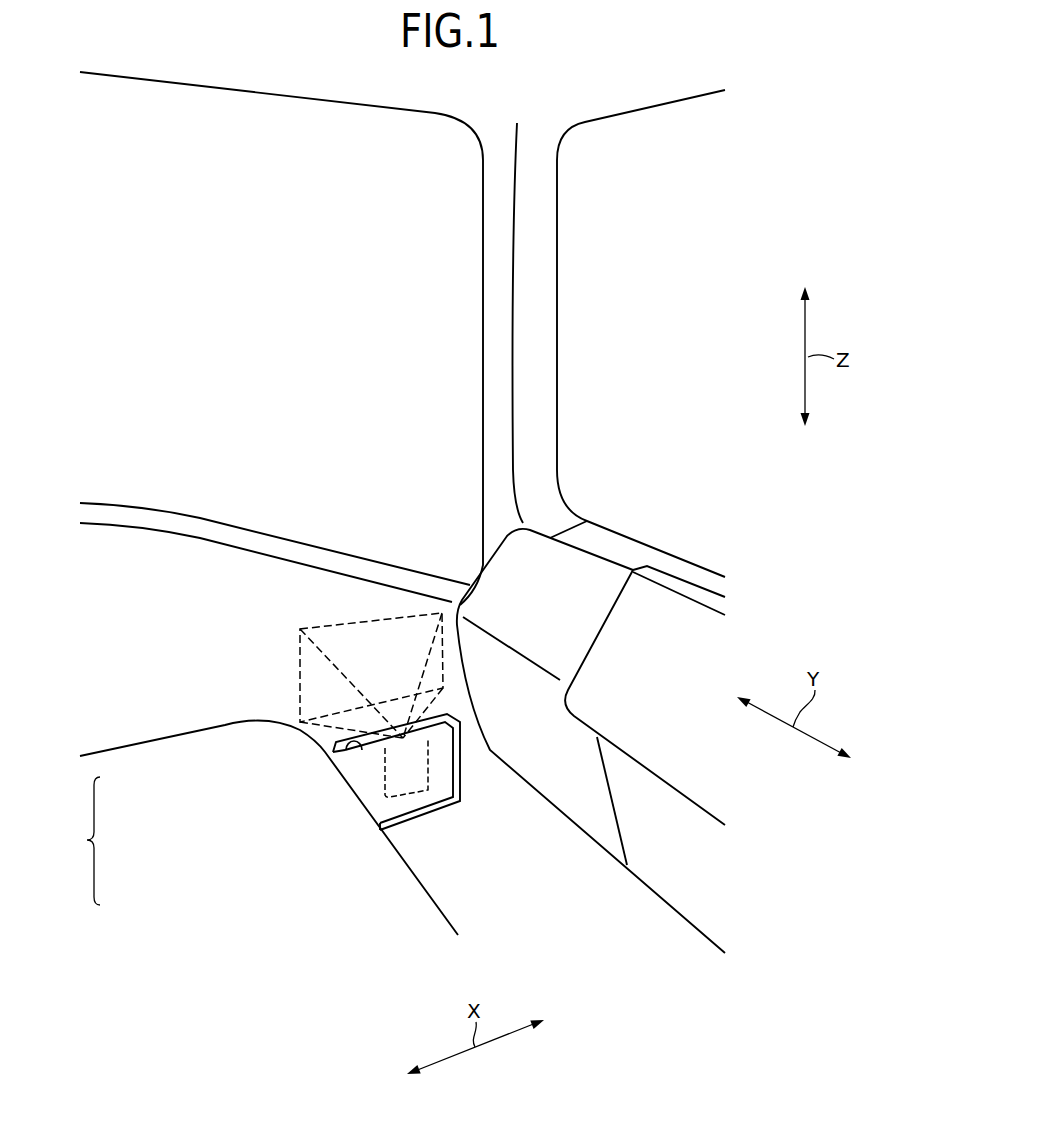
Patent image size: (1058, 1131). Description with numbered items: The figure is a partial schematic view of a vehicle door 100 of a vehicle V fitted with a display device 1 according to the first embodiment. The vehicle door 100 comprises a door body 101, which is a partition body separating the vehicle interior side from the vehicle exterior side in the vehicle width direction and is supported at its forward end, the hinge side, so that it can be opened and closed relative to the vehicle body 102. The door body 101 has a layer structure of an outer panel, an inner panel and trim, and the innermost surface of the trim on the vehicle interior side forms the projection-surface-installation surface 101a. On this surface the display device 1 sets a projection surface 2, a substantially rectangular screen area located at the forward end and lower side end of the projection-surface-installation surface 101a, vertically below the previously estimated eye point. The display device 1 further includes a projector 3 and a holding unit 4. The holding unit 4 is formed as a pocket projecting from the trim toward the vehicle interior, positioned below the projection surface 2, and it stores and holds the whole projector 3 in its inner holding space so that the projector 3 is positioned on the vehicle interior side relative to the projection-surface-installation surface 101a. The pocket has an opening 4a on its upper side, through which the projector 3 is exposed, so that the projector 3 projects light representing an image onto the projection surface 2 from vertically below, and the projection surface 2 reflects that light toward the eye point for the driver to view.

The vehicle door 100 is at (73, 841).
The door body 101 is at (178, 696).
The projection-surface-installation surface 101a is at (293, 600).
The vehicle body 102 is at (547, 464).
The vehicle V is at (696, 543).
The display device 1 is at (295, 818).
The projection surface 2 is at (313, 674).
The projector 3 is at (410, 778).
The holding unit 4 is at (452, 781).
The opening 4a is at (354, 762).